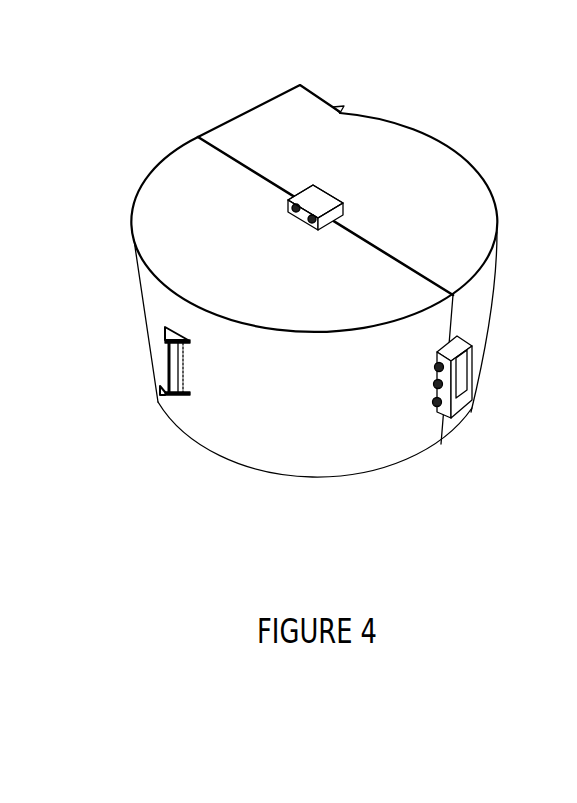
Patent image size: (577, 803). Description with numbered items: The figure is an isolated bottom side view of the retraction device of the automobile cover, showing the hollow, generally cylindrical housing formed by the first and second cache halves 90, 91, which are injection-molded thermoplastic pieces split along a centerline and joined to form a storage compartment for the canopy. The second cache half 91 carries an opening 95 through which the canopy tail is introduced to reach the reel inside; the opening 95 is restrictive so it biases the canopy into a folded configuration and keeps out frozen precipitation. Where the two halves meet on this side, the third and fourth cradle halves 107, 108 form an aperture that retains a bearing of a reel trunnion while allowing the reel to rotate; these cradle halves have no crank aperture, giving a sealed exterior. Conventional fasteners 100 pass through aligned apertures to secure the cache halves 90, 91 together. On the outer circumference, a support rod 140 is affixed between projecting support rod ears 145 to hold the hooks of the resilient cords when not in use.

The first cache half 90 is at (300, 312).
The second cache half 91 is at (485, 215).
The opening 95 is at (318, 92).
The fasteners 100 is at (435, 369).
The third cradle half 107 is at (295, 203).
The fourth cradle half 108 is at (323, 195).
The support rod 140 is at (172, 360).
The support rod ears 145 is at (177, 397).